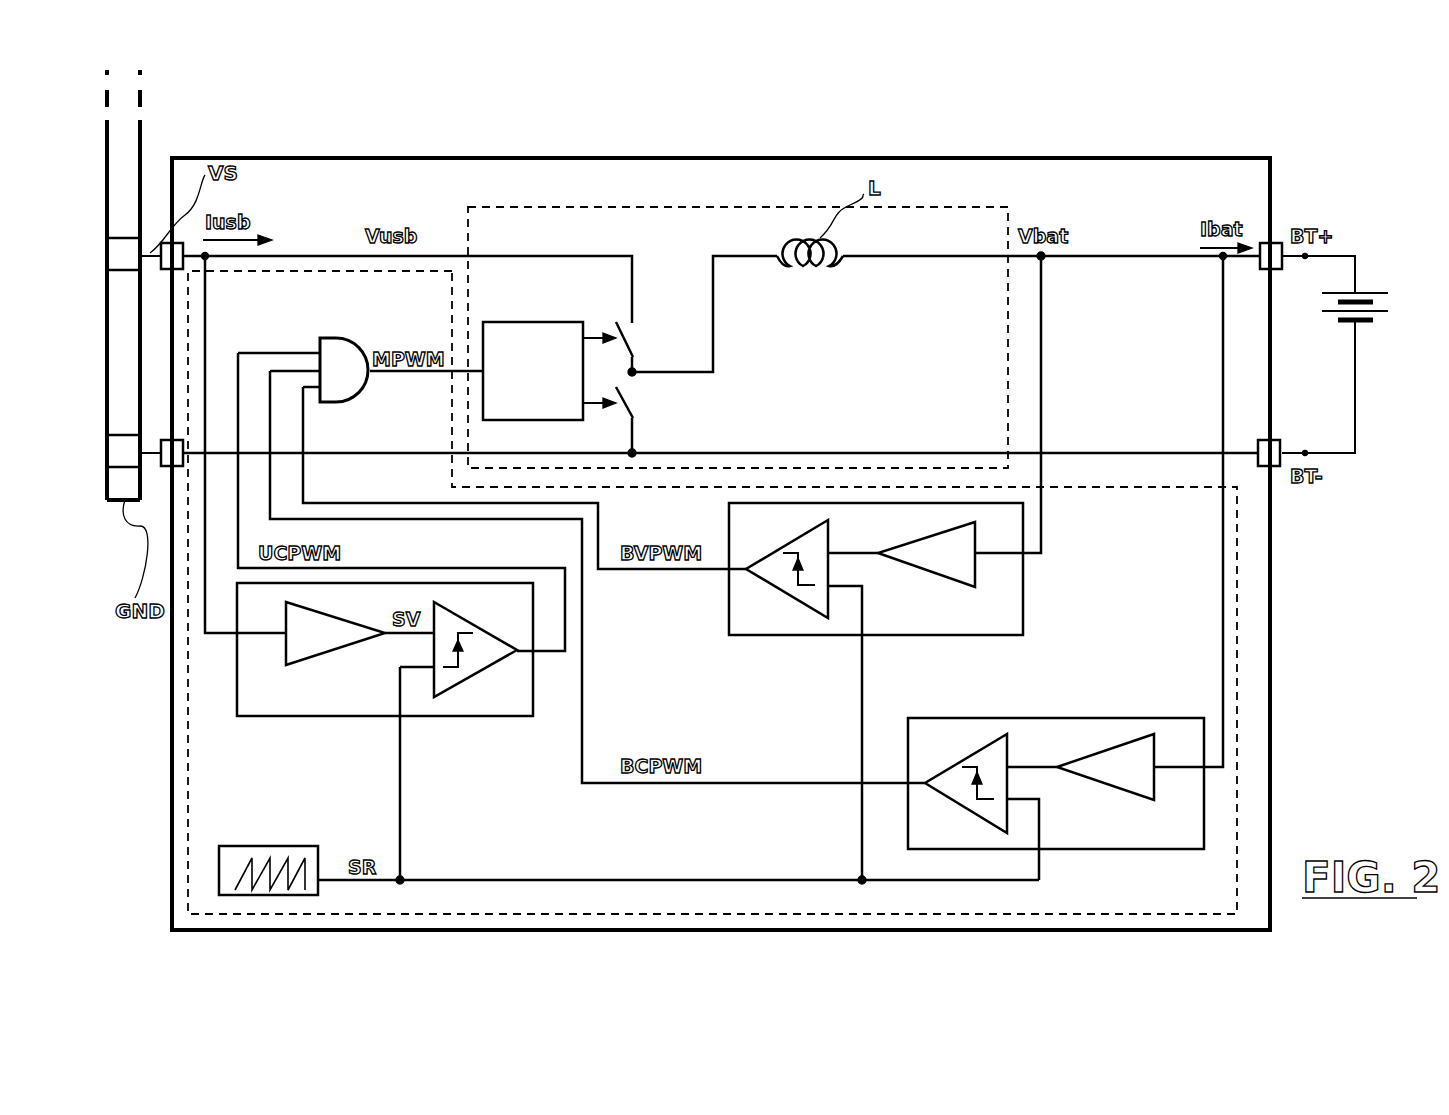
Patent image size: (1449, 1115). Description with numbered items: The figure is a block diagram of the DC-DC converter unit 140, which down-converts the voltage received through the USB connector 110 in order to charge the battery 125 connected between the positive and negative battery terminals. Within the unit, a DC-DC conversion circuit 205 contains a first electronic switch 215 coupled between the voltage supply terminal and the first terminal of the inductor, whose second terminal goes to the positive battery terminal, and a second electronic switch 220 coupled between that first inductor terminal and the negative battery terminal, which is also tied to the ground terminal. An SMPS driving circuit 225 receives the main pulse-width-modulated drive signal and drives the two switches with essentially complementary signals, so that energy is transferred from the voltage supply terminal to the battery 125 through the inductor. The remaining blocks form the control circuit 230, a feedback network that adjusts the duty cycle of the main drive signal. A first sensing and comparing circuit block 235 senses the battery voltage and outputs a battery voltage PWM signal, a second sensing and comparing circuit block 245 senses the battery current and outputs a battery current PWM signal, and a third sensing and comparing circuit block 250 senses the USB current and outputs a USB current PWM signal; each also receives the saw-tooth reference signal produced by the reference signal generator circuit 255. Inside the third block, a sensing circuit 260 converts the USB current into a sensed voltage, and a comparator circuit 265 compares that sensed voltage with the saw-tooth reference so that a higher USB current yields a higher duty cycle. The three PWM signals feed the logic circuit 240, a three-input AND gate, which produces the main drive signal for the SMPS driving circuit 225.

The USB connector 110 is at (140, 125).
The battery 125 is at (1358, 292).
The DC-DC converter unit 140 is at (170, 690).
The DC-DC conversion circuit 205 is at (545, 207).
The first electronic switch 215 is at (640, 337).
The second electronic switch 220 is at (636, 400).
The SMPS driving circuit 225 is at (525, 322).
The control circuit 230 is at (188, 812).
The first sensing and comparing circuit block 235 is at (1023, 583).
The logic circuit 240 is at (350, 338).
The second sensing and comparing circuit block 245 is at (1100, 718).
The third sensing and comparing circuit block 250 is at (523, 716).
The reference signal generator circuit 255 is at (285, 845).
The sensing circuit 260 is at (310, 662).
The comparator circuit 265 is at (440, 700).